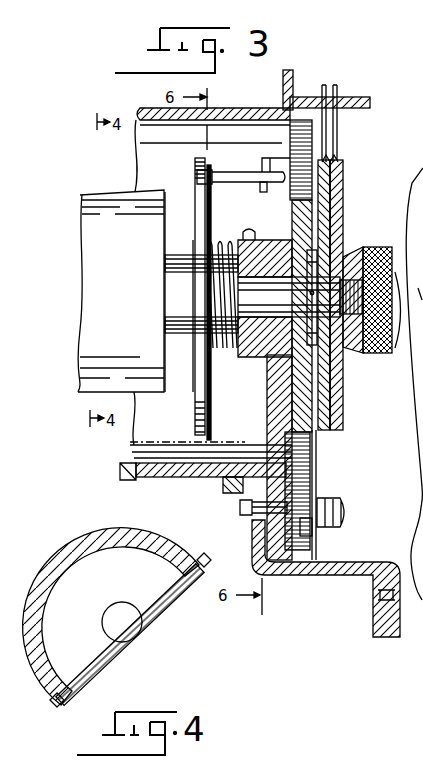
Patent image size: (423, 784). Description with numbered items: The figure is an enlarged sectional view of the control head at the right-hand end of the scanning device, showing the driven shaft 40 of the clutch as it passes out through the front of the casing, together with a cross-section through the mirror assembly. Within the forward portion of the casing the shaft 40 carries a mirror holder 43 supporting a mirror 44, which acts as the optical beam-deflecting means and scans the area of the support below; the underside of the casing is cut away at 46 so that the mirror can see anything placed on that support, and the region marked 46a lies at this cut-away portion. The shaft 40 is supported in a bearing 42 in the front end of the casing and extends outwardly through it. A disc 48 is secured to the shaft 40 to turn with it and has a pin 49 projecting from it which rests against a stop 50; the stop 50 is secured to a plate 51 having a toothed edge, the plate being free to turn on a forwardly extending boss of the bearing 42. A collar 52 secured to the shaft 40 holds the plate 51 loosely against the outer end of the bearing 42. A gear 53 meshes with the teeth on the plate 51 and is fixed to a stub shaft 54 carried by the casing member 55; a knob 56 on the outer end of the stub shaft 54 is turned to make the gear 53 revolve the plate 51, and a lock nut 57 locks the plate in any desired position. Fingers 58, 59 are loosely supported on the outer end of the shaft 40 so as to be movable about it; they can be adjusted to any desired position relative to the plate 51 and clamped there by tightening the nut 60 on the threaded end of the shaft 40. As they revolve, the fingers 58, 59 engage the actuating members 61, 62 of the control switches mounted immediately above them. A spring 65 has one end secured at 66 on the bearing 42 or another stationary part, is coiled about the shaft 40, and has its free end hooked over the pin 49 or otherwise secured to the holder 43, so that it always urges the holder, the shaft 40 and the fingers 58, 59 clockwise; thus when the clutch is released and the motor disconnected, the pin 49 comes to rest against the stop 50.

In FIG. 3, the driven shaft 40 is at (184, 254).
In FIG. 4, the driven shaft 40 is at (104, 613).
In FIG. 3, the bearing 42 is at (263, 359).
In FIG. 3, the mirror holder 43 is at (118, 190).
In FIG. 4, the mirror holder 43 is at (50, 568).
In FIG. 4, the mirror 44 is at (162, 593).
In FIG. 3, the cut-away portion 46 is at (133, 480).
In FIG. 3, the bottom plate 46a is at (190, 478).
In FIG. 3, the disc 48 is at (196, 184).
In FIG. 3, the pin 49 is at (229, 176).
In FIG. 3, the stop 50 is at (263, 193).
In FIG. 3, the plate 51 is at (303, 395).
In FIG. 3, the collar 52 is at (316, 346).
In FIG. 3, the gear 53 is at (313, 528).
In FIG. 3, the stub shaft 54 is at (250, 517).
In FIG. 3, the casing member 55 is at (323, 578).
In FIG. 3, the knob 56 is at (344, 500).
In FIG. 3, the lock nut 57 is at (317, 497).
In FIG. 3, the finger 58 is at (344, 185).
In FIG. 3, the finger 59 is at (331, 210).
In FIG. 3, the nut 60 is at (376, 250).
In FIG. 3, the actuating member 61 is at (339, 153).
In FIG. 3, the actuating member 62 is at (326, 126).
In FIG. 3, the spring 65 is at (216, 349).
In FIG. 3, the spring anchorage 66 is at (245, 231).